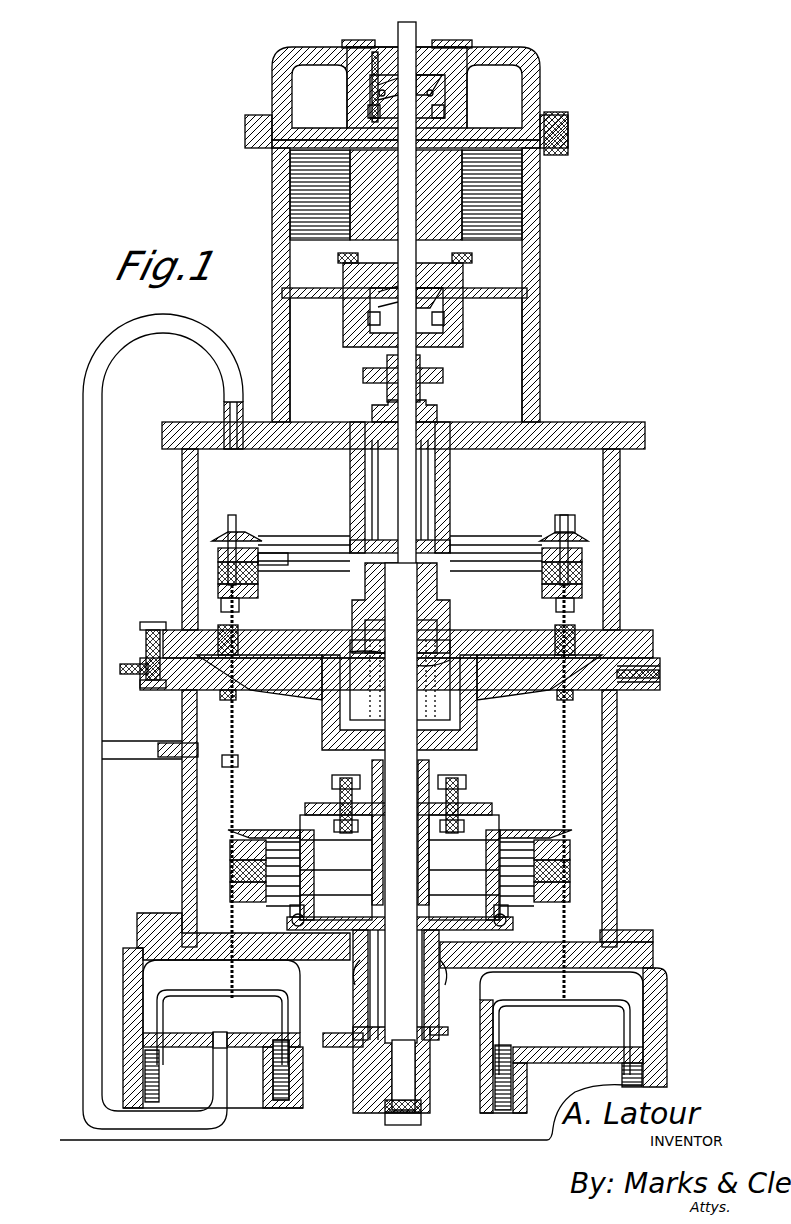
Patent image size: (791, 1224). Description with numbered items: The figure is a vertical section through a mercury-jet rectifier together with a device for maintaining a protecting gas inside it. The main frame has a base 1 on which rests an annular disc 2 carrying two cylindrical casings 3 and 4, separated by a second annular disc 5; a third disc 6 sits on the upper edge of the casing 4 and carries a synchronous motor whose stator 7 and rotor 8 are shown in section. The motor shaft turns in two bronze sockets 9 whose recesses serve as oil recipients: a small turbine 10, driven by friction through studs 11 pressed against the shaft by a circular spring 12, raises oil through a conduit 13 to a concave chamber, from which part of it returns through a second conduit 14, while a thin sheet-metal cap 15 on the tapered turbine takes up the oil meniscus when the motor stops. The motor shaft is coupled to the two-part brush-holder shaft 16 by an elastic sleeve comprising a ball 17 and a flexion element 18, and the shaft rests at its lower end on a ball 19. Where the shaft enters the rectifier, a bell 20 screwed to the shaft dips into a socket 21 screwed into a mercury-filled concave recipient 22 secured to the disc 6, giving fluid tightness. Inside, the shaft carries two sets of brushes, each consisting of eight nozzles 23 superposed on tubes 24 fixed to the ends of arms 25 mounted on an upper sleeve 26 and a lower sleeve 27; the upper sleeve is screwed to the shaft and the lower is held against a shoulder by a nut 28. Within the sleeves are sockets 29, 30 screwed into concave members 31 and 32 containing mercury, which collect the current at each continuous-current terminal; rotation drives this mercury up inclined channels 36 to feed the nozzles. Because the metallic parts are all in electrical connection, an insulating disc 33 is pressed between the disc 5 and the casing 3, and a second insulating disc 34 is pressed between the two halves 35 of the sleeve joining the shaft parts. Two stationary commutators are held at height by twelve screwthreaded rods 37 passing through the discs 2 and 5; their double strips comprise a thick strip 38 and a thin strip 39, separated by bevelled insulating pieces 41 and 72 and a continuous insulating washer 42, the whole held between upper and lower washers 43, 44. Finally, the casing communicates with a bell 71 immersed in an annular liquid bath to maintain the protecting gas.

The base 1 is at (667, 1016).
The annular disc 2 is at (225, 542).
The cylindrical casing 3 is at (618, 742).
The cylindrical casing 4 is at (620, 606).
The second annular disc 5 is at (568, 690).
The third disc 6 is at (570, 424).
The stator 7 is at (532, 202).
The rotor 8 is at (455, 160).
The bronze socket 9 is at (392, 47).
The turbine 10 is at (366, 105).
The stud 11 is at (422, 288).
The circular spring 12 is at (448, 88).
The conduit 13 is at (375, 50).
The second conduit 14 is at (420, 45).
The cap 15 is at (372, 85).
The brush-holder shaft 16 is at (416, 500).
The ball 17 is at (430, 400).
The flexion element 18 is at (363, 376).
The ball 19 is at (394, 1093).
The bell 20 is at (350, 480).
The socket 21 is at (428, 530).
The concave recipient 22 is at (450, 470).
The nozzle 23 is at (296, 840).
The tube 24 is at (290, 908).
The arm 25 is at (320, 932).
The upper sleeve 26 is at (450, 615).
The lower sleeve 27 is at (439, 963).
The nut 28 is at (418, 880).
The socket 29 is at (450, 636).
The socket 30 is at (500, 1010).
The concave member 31 is at (477, 729).
The concave member 32 is at (467, 1055).
The insulating disc 33 is at (660, 676).
The insulating disc 34 is at (472, 810).
The sleeve half 35 is at (372, 770).
The channel 36 is at (425, 665).
The screwthreaded rod 37 is at (236, 707).
The thick strip 38 is at (548, 545).
The thin strip 39 is at (575, 565).
The bevelled insulating piece 41 is at (262, 556).
The insulating washer 42 is at (300, 562).
The washer 43 is at (258, 534).
The washer 44 is at (248, 598).
The bell 71 is at (200, 992).
The bevelled insulating piece 72 is at (258, 570).